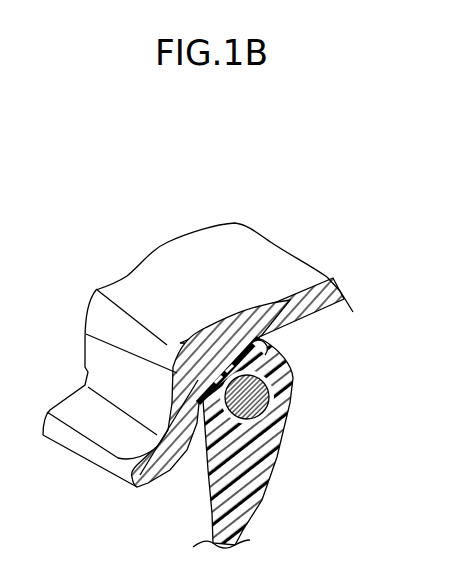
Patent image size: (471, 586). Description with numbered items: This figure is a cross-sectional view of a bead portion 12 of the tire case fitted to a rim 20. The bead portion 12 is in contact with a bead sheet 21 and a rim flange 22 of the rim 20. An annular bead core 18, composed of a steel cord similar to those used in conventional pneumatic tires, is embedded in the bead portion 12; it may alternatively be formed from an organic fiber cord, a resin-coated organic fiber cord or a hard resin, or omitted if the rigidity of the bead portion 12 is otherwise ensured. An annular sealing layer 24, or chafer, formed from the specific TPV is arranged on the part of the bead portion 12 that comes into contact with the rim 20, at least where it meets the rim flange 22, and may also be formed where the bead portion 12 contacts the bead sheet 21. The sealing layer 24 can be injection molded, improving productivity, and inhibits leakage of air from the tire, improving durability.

The bead portion 12 is at (290, 425).
The bead core 18 is at (270, 397).
The rim 20 is at (211, 218).
The bead sheet 21 is at (260, 350).
The rim flange 22 is at (121, 386).
The sealing layer 24 is at (87, 334).